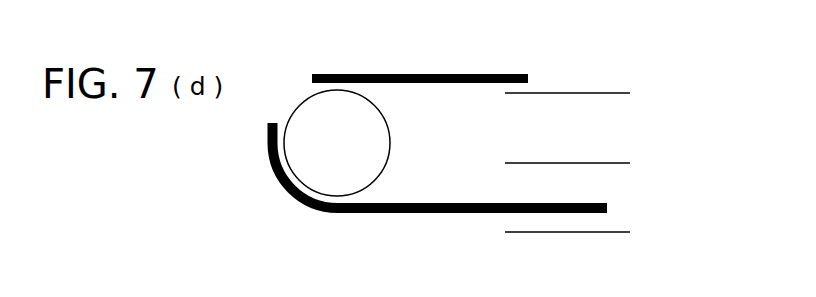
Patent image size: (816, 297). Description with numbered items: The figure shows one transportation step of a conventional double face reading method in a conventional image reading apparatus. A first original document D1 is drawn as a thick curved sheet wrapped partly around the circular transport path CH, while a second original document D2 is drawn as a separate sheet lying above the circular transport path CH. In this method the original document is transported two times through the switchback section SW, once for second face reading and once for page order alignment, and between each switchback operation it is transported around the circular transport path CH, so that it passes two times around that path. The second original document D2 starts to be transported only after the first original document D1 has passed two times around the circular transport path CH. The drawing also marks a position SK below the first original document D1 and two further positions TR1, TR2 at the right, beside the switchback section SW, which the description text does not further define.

The circular transport path CH is at (315, 120).
The second original document D2 is at (426, 73).
The first original document D1 is at (430, 202).
The skew / scan position SK is at (334, 262).
The first track TR1 is at (580, 93).
The second track TR2 is at (580, 163).
The switchback section SW is at (580, 232).